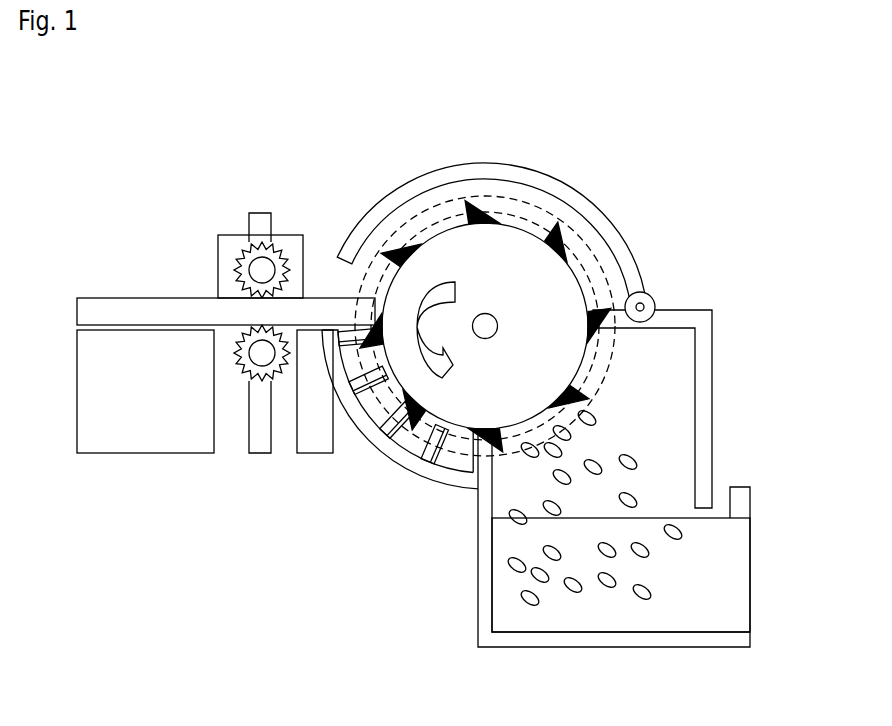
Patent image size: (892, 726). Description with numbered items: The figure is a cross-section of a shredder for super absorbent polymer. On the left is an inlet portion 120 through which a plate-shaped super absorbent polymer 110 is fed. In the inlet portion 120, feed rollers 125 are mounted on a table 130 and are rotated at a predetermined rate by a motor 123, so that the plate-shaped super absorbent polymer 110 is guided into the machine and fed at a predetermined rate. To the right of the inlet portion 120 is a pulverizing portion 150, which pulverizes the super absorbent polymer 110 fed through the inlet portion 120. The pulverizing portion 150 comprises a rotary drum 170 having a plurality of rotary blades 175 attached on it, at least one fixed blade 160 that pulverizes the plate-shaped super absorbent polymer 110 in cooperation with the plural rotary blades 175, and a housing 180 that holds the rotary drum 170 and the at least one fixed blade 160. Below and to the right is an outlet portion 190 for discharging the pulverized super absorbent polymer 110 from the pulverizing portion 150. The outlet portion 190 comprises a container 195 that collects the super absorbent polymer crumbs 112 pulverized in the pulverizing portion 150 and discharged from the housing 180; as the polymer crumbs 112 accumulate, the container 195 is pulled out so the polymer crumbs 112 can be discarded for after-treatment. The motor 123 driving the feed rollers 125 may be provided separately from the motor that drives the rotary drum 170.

The plate-shaped super absorbent polymer 110 is at (130, 303).
The super absorbent polymer crumbs 112 is at (527, 600).
The inlet portion 120 is at (204, 381).
The motor 123 is at (233, 240).
The feed rollers 125 is at (242, 288).
The table 130 is at (122, 452).
The pulverizing portion 150 is at (581, 121).
The fixed blade 160 is at (466, 473).
The rotary drum 170 is at (565, 292).
The rotary blades 175 is at (570, 258).
The housing 180 is at (695, 312).
The outlet portion 190 is at (663, 503).
The container 195 is at (642, 575).